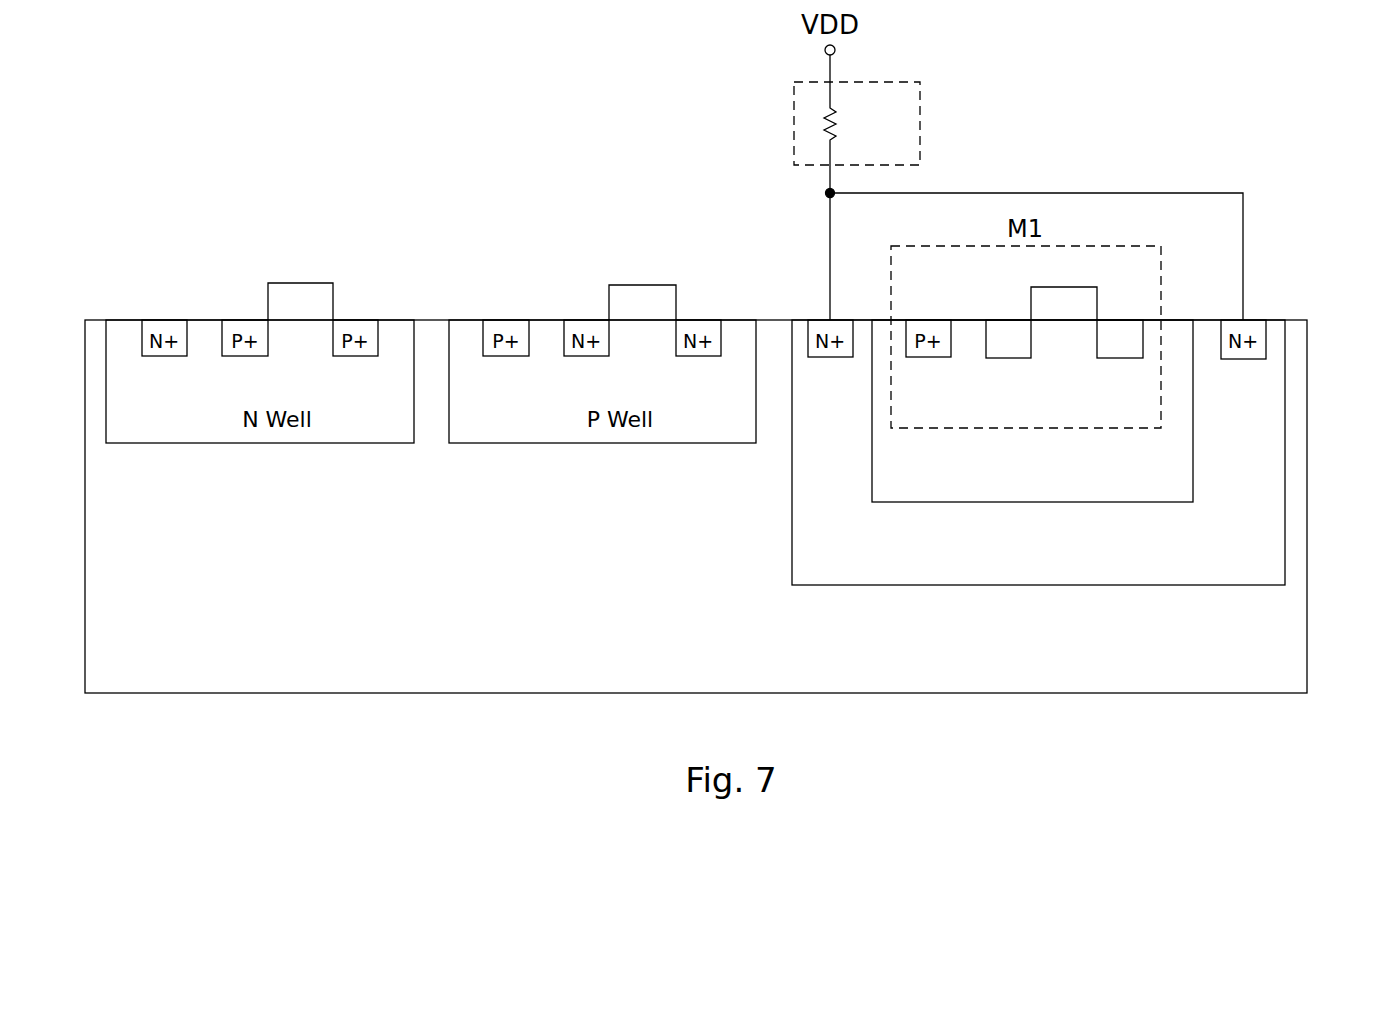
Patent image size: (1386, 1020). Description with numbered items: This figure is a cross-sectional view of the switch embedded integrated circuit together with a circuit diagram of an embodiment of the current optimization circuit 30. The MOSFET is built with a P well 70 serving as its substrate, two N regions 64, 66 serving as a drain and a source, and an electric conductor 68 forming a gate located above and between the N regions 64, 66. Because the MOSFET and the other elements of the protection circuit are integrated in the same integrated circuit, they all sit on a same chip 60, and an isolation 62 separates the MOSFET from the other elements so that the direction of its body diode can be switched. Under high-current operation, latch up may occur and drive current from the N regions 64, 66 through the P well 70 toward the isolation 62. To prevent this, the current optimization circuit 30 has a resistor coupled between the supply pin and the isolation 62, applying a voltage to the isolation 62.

The current optimization circuit 30 is at (922, 122).
The chip 60 is at (1308, 641).
The isolation 62 is at (792, 515).
The N region 64 is at (1006, 359).
The N region 66 is at (1118, 359).
The electric conductor 68 is at (1062, 286).
The P well 70 is at (1178, 335).